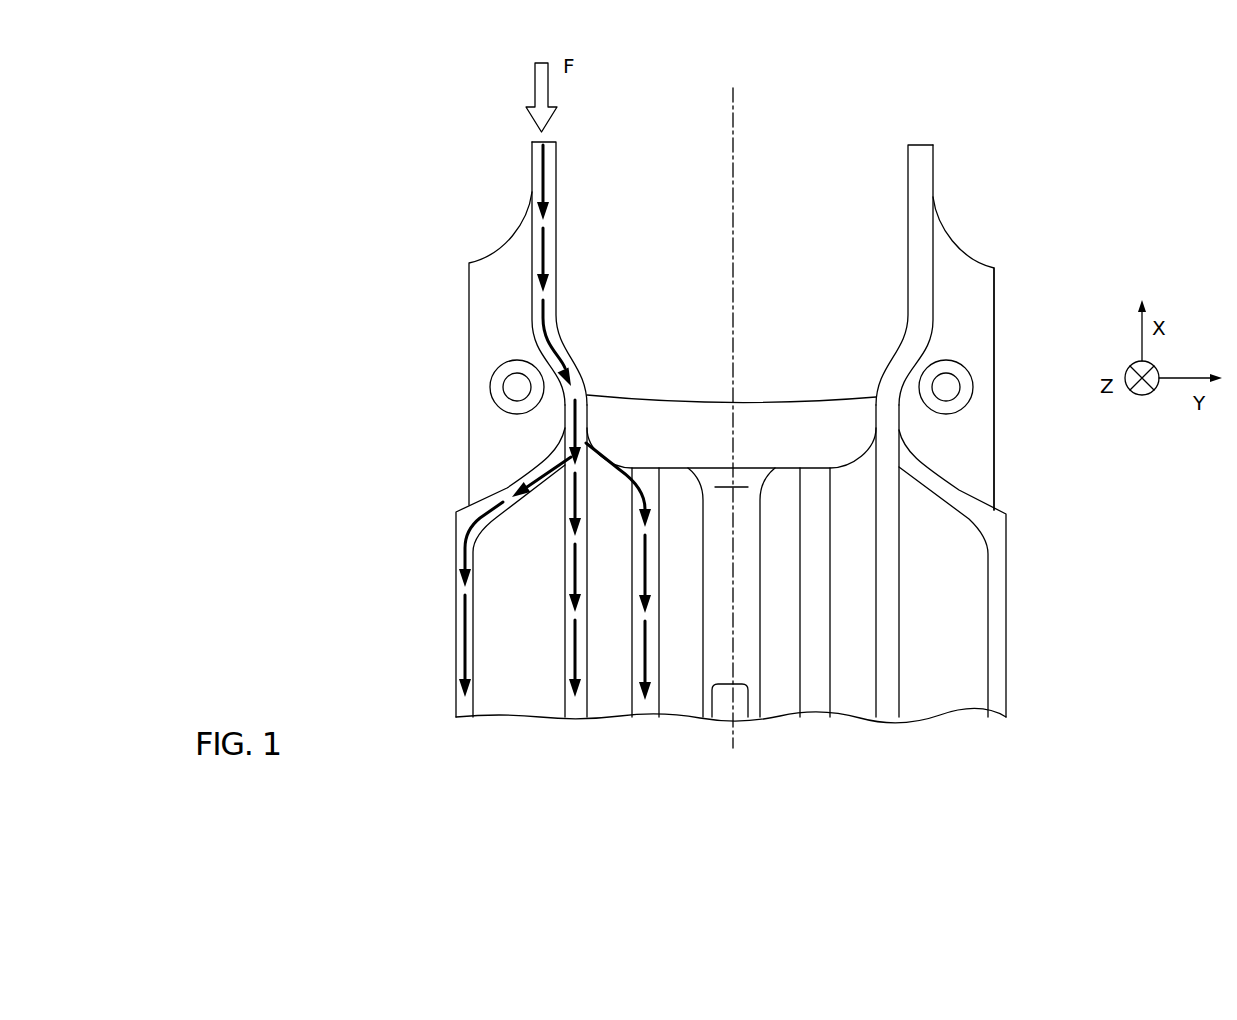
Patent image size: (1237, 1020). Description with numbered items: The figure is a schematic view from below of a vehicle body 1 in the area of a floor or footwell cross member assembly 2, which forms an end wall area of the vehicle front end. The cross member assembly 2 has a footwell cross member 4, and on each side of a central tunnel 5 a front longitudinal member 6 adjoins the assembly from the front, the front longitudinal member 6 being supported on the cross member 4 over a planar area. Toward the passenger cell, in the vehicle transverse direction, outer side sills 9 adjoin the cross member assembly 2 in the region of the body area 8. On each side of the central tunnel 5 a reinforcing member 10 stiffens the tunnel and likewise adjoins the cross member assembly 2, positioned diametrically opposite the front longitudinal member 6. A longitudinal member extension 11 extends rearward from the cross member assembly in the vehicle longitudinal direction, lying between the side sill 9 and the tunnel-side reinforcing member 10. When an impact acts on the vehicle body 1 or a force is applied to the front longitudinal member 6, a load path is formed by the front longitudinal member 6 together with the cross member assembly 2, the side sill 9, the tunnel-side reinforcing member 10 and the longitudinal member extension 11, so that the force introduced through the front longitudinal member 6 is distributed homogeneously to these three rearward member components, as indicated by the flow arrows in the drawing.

The vehicle body 1 is at (826, 143).
The cross member assembly 2 is at (794, 361).
The footwell cross member 4 is at (657, 420).
The central tunnel 5 is at (750, 663).
The front longitudinal member 6 is at (551, 193).
The body area 8 is at (1038, 599).
The side sill 9 is at (463, 602).
The reinforcing member 10 is at (812, 592).
The longitudinal member extension 11 is at (571, 708).